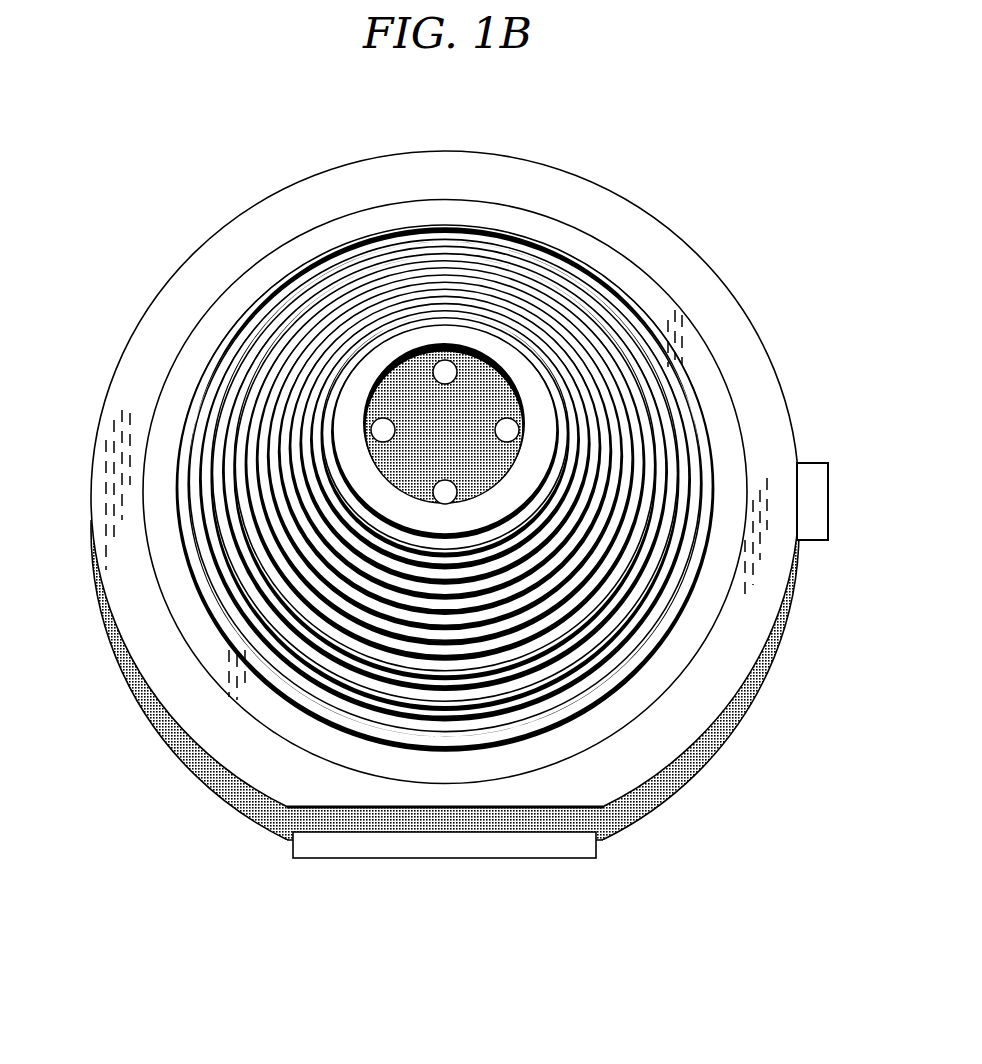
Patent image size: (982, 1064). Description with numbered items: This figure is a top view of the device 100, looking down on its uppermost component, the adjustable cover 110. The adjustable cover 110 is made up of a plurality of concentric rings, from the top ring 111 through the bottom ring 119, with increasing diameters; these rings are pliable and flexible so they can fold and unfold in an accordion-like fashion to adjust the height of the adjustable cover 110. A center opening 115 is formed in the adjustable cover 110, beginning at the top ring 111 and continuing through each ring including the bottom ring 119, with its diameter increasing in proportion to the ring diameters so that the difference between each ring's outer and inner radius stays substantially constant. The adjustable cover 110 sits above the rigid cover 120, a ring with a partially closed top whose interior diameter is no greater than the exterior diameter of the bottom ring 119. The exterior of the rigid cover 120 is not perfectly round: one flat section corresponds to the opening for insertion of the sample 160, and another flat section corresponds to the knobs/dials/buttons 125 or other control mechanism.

The device 100 is at (460, 93).
The adjustable cover 110 is at (247, 405).
The top ring 111 is at (533, 382).
The center opening 115 is at (493, 365).
The bottom ring 119 is at (238, 292).
The rigid cover 120 is at (130, 410).
The knobs/dials/buttons 125 is at (812, 475).
The sample 160 is at (443, 850).